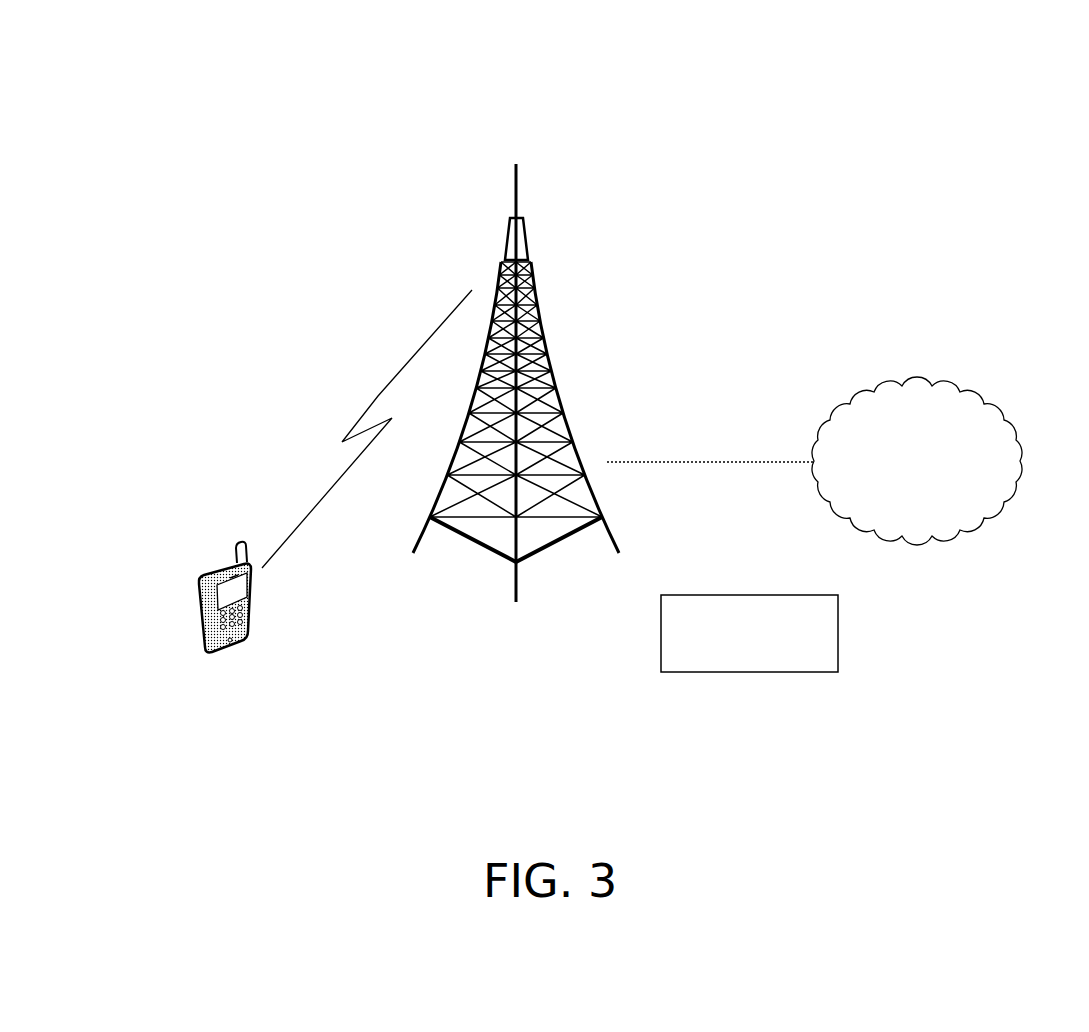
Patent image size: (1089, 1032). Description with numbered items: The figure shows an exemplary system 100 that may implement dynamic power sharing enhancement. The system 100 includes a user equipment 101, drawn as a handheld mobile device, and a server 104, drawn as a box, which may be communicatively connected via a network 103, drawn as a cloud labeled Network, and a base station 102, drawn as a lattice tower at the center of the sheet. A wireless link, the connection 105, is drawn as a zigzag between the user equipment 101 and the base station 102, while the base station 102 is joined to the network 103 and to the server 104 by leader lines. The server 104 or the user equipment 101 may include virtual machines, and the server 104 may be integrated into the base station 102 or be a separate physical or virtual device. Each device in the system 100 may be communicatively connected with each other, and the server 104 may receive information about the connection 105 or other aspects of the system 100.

The system 100 is at (1053, 71).
The user equipment 101 is at (197, 588).
The base station 102 is at (585, 368).
The network 103 is at (938, 433).
The server 104 is at (517, 598).
The connection 105 is at (378, 396).